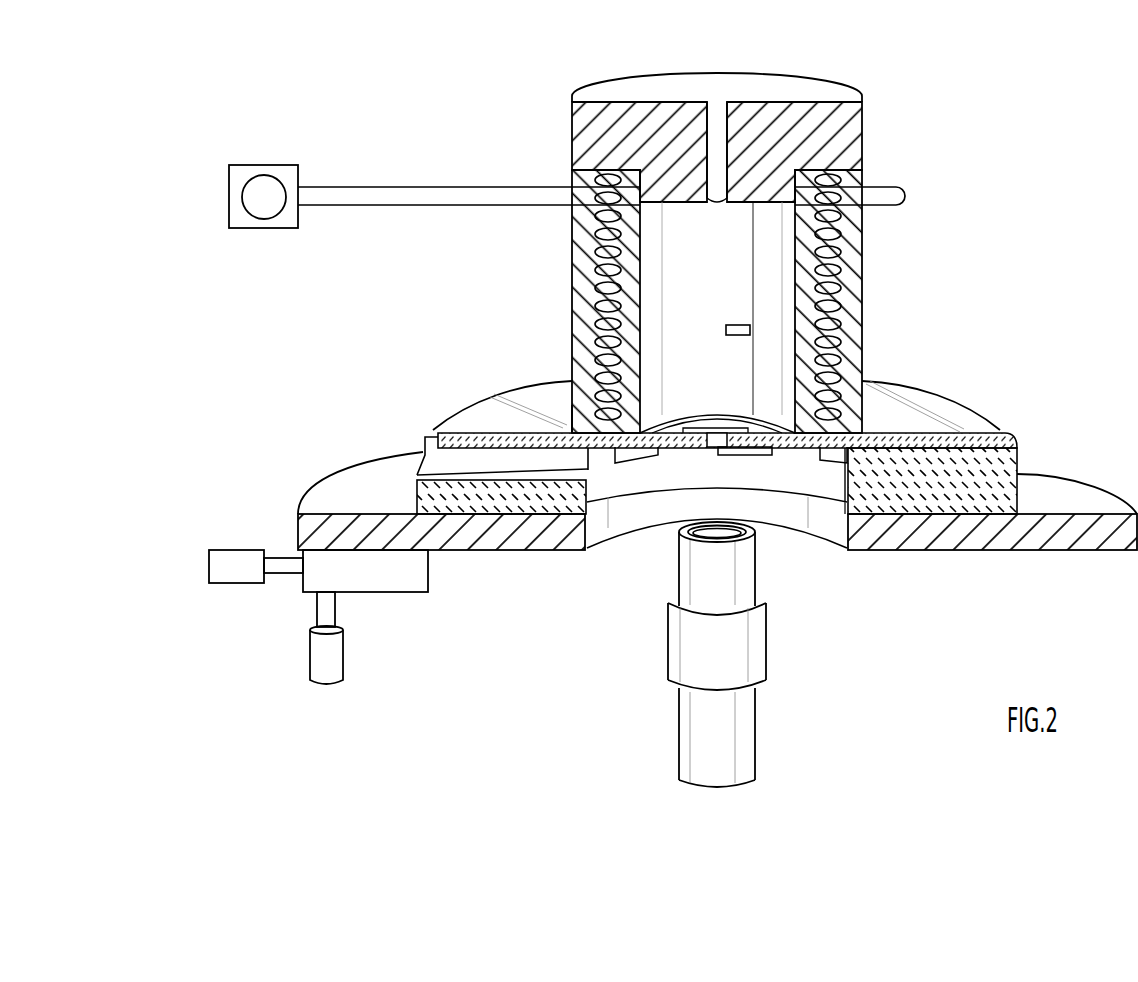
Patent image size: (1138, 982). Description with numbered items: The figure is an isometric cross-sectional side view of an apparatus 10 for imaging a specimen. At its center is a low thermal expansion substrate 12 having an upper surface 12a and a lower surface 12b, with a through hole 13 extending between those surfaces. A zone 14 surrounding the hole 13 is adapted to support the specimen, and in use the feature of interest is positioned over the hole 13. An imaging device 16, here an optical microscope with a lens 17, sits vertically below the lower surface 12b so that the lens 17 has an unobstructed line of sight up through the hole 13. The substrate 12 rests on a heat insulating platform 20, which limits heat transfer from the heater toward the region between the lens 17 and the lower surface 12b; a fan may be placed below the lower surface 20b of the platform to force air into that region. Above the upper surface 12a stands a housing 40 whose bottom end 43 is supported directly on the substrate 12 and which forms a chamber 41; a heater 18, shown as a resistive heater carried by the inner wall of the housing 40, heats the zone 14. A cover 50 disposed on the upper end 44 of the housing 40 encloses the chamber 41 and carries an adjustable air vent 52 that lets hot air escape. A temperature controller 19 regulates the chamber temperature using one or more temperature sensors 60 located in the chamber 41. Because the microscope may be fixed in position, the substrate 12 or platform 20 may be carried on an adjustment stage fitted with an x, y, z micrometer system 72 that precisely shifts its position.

The apparatus 10 is at (545, 110).
The low thermal expansion substrate 12 is at (933, 393).
The upper surface 12a is at (980, 428).
The lower surface 12b is at (1017, 457).
The through hole 13 is at (717, 447).
The zone 14 is at (687, 433).
The imaging device 16 is at (757, 710).
The lens 17 is at (717, 534).
The heater 18 is at (853, 277).
The temperature controller 19 is at (258, 164).
The heat insulating platform 20 is at (1095, 490).
The lower surface of the heat insulating platform 20b is at (918, 516).
The housing 40 is at (853, 215).
The chamber 41 is at (700, 294).
The bottom end of the housing 43 is at (572, 412).
The upper end of the housing 44 is at (863, 177).
The cover 50 is at (864, 121).
The air vent 52 is at (717, 104).
The temperature sensor 60 is at (741, 325).
The x, y, z micrometer system 72 is at (240, 637).